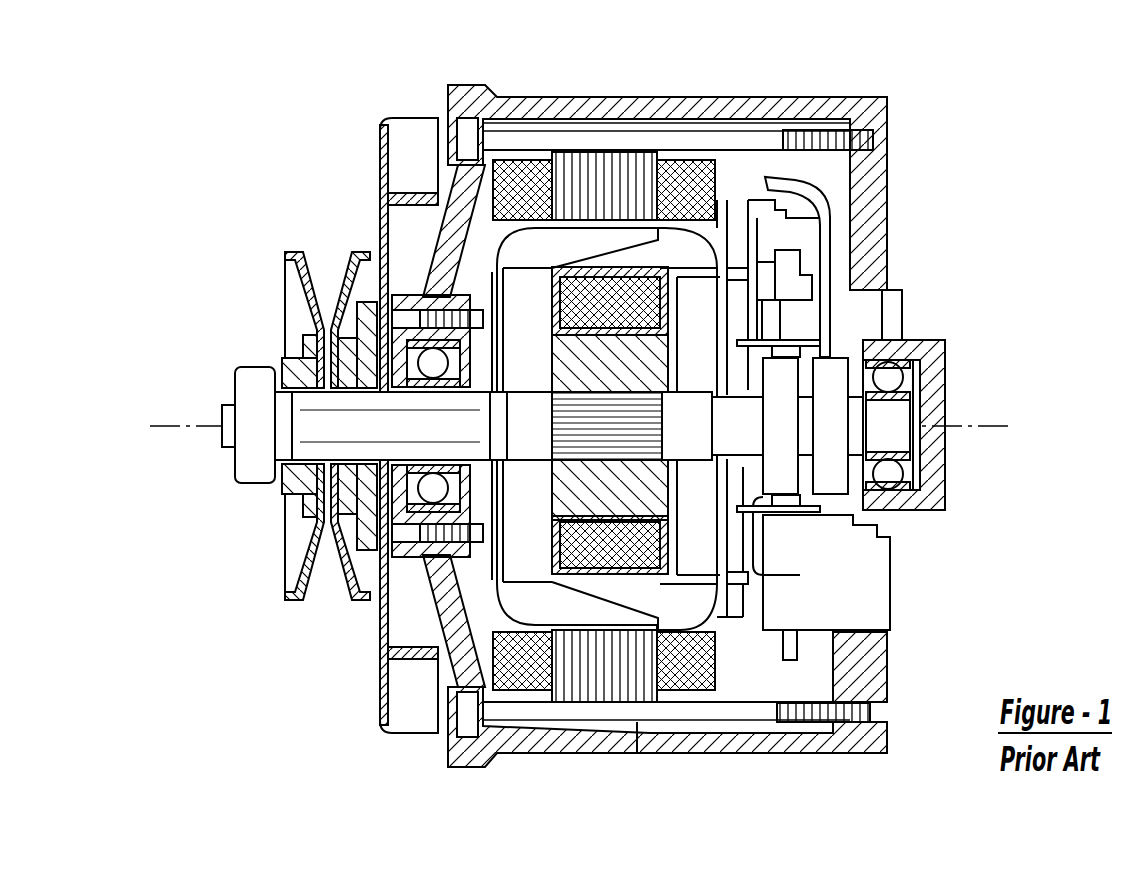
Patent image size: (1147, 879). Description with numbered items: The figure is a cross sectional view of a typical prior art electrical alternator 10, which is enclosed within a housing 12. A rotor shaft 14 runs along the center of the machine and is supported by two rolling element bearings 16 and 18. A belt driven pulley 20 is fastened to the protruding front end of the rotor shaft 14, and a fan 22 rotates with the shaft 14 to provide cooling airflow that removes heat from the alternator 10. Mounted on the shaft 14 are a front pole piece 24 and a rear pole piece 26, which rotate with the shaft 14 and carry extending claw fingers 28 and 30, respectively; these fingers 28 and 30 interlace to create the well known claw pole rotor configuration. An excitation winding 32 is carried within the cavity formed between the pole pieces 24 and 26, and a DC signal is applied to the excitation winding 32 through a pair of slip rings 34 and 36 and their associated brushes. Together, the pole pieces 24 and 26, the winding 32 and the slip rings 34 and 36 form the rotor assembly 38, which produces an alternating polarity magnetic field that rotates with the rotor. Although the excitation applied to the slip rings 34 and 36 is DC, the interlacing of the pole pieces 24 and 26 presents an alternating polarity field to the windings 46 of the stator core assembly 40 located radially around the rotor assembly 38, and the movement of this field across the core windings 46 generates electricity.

The electrical alternator 10 is at (957, 152).
The housing 12 is at (832, 98).
The rotor shaft 14 is at (365, 438).
The rolling element bearing 16 is at (407, 550).
The rolling element bearing 18 is at (900, 355).
The belt driven pulley 20 is at (316, 256).
The fan 22 is at (405, 152).
The front pole piece 24 is at (517, 577).
The rear pole piece 26 is at (697, 597).
The claw fingers 28 is at (582, 610).
The claw fingers 30 is at (653, 602).
The excitation winding 32 is at (612, 318).
The slip ring 34 is at (777, 357).
The slip ring 36 is at (833, 472).
The rotor assembly 38 is at (505, 608).
The stator core assembly 40 is at (523, 160).
The stator windings 46 is at (703, 160).